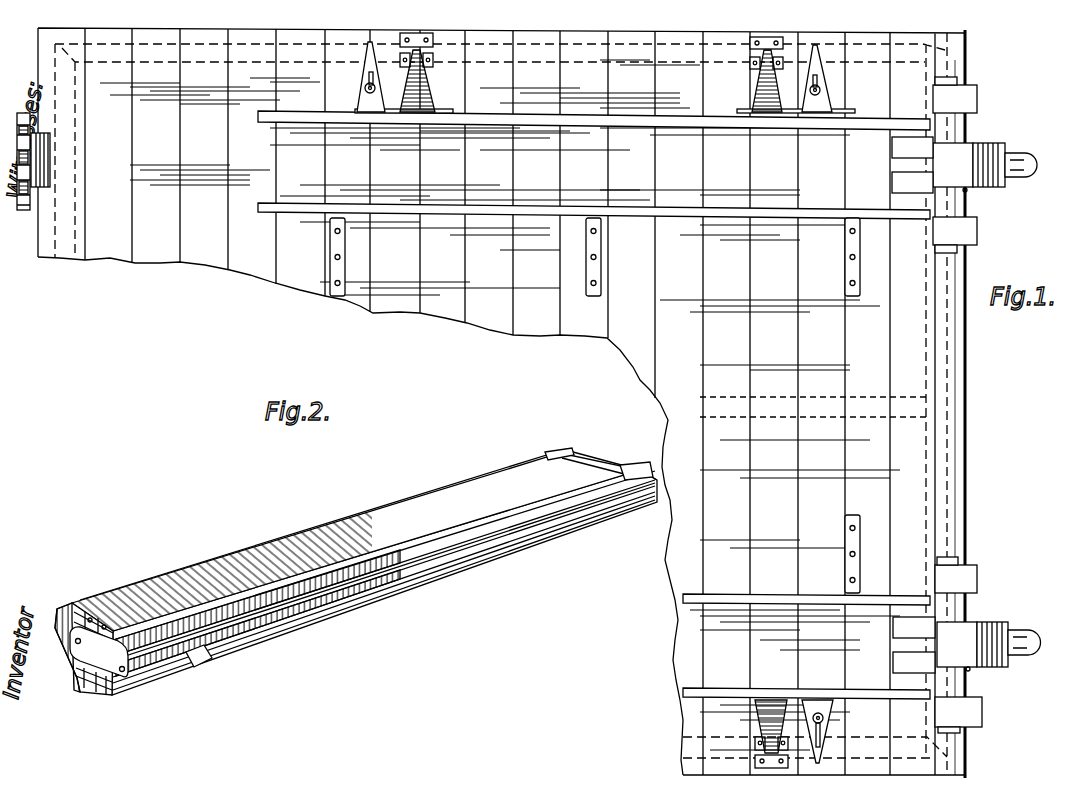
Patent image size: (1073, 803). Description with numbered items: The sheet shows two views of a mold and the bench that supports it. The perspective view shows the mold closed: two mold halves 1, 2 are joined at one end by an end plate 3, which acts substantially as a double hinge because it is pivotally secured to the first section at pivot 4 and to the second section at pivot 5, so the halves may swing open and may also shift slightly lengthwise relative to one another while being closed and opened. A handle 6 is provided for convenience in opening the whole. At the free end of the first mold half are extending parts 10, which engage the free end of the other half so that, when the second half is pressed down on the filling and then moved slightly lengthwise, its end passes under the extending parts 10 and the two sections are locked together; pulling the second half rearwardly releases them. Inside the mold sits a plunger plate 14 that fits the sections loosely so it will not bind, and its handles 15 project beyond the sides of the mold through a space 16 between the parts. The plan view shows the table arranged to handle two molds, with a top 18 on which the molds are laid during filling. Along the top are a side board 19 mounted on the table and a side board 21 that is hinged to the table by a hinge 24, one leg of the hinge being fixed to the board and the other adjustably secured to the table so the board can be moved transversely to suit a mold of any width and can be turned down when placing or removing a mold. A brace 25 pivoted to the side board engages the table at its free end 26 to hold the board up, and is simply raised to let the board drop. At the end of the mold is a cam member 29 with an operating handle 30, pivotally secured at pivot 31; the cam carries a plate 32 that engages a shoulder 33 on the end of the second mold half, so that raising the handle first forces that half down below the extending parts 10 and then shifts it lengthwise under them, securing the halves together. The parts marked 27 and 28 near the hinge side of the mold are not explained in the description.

In FIG. 2, the mold half 1 is at (248, 655).
In FIG. 2, the mold half 2 is at (184, 570).
In FIG. 2, the end plate 3 is at (65, 640).
In FIG. 2, the pivot 4 is at (107, 693).
In FIG. 2, the pivot 5 is at (74, 603).
In FIG. 2, the handle 6 is at (74, 670).
In FIG. 2, the extending parts 10 is at (560, 450).
In FIG. 2, the plunger plate 14 is at (199, 628).
In FIG. 2, the handles 15 is at (197, 666).
In FIG. 2, the space 16 is at (420, 575).
In FIG. 1, the table top 18 is at (963, 482).
In FIG. 1, the side board 19 is at (668, 218).
In FIG. 1, the side board 21 is at (666, 120).
In FIG. 1, the hinge 24 is at (363, 100).
In FIG. 1, the brace 25 is at (430, 95).
In FIG. 1, the brace end 26 is at (433, 44).
In FIG. 1, the hinge plate 27 is at (45, 180).
In FIG. 1, the hinge knuckle 28 is at (30, 152).
In FIG. 1, the cam member 29 is at (968, 190).
In FIG. 1, the operating handle 30 is at (1028, 157).
In FIG. 1, the pivot 31 is at (960, 222).
In FIG. 1, the plate 32 is at (980, 143).
In FIG. 2, the shoulder 33 is at (616, 446).